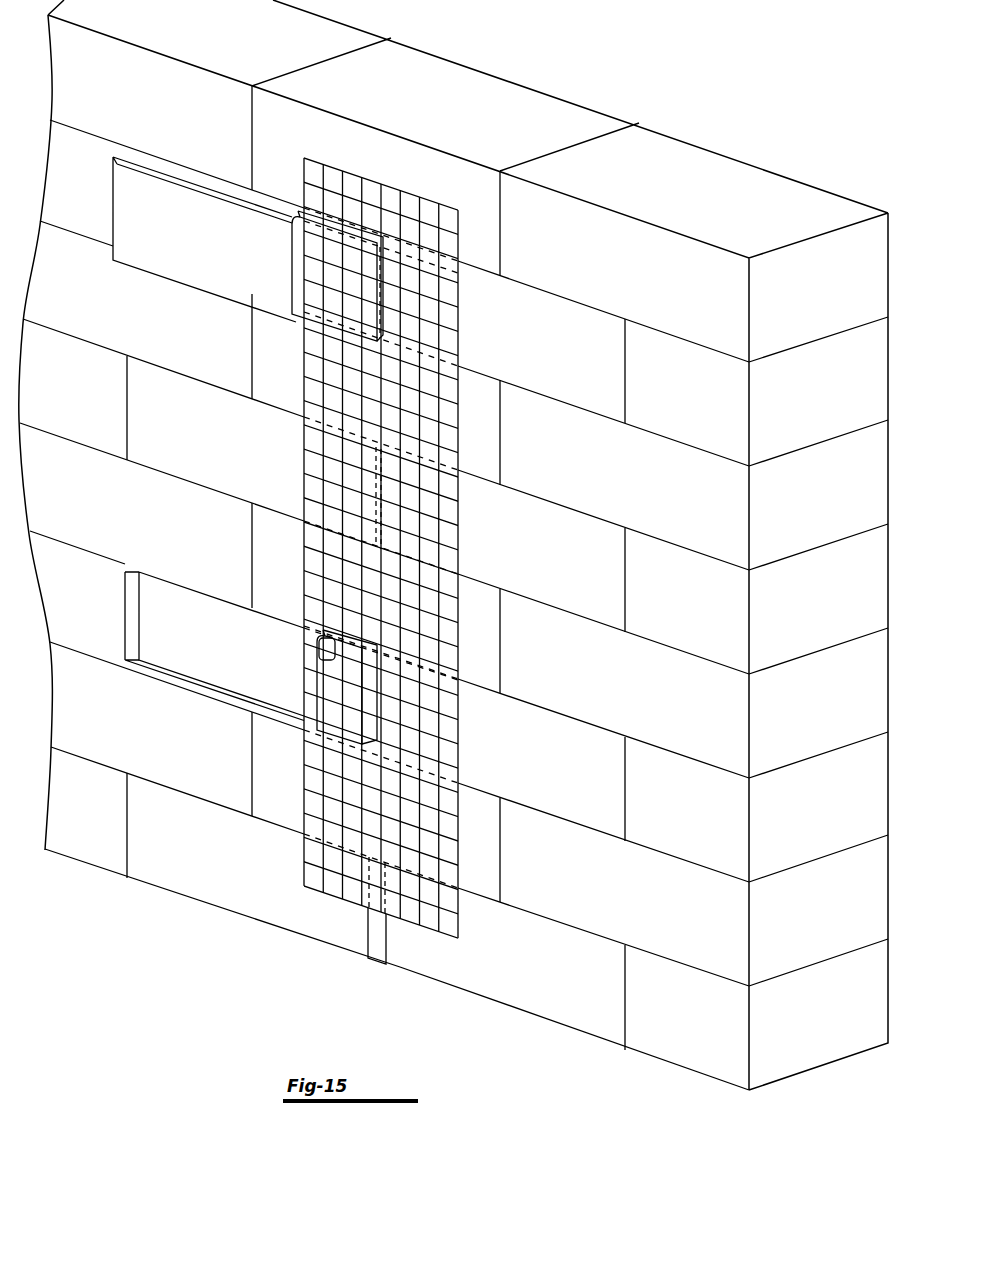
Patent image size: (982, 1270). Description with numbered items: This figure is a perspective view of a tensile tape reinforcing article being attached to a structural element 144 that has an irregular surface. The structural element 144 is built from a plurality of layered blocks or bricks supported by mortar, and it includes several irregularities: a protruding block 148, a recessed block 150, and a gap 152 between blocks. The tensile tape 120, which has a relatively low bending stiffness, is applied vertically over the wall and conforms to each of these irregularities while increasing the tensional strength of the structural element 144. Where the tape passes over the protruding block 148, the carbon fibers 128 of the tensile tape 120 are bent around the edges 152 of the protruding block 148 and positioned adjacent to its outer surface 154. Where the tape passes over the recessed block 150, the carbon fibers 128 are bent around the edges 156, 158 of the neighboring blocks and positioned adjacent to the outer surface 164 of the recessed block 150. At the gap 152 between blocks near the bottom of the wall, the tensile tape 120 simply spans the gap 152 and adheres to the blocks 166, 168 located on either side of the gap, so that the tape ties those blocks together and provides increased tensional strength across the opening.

The tensile tape 120 is at (421, 516).
The carbon fibers 128 is at (425, 291).
The structural element 144 is at (453, 545).
The protruding block 148 is at (264, 210).
The recessed block 150 is at (291, 646).
The gap between blocks 152 is at (303, 316).
The outer surface of the protruding block 154 is at (177, 254).
The edge of adjacent block 156 is at (330, 650).
The edge of adjacent block 158 is at (214, 686).
The outer surface of the recessed block 164 is at (291, 694).
The block adjacent to the gap 166 is at (242, 898).
The block adjacent to the gap 168 is at (490, 990).